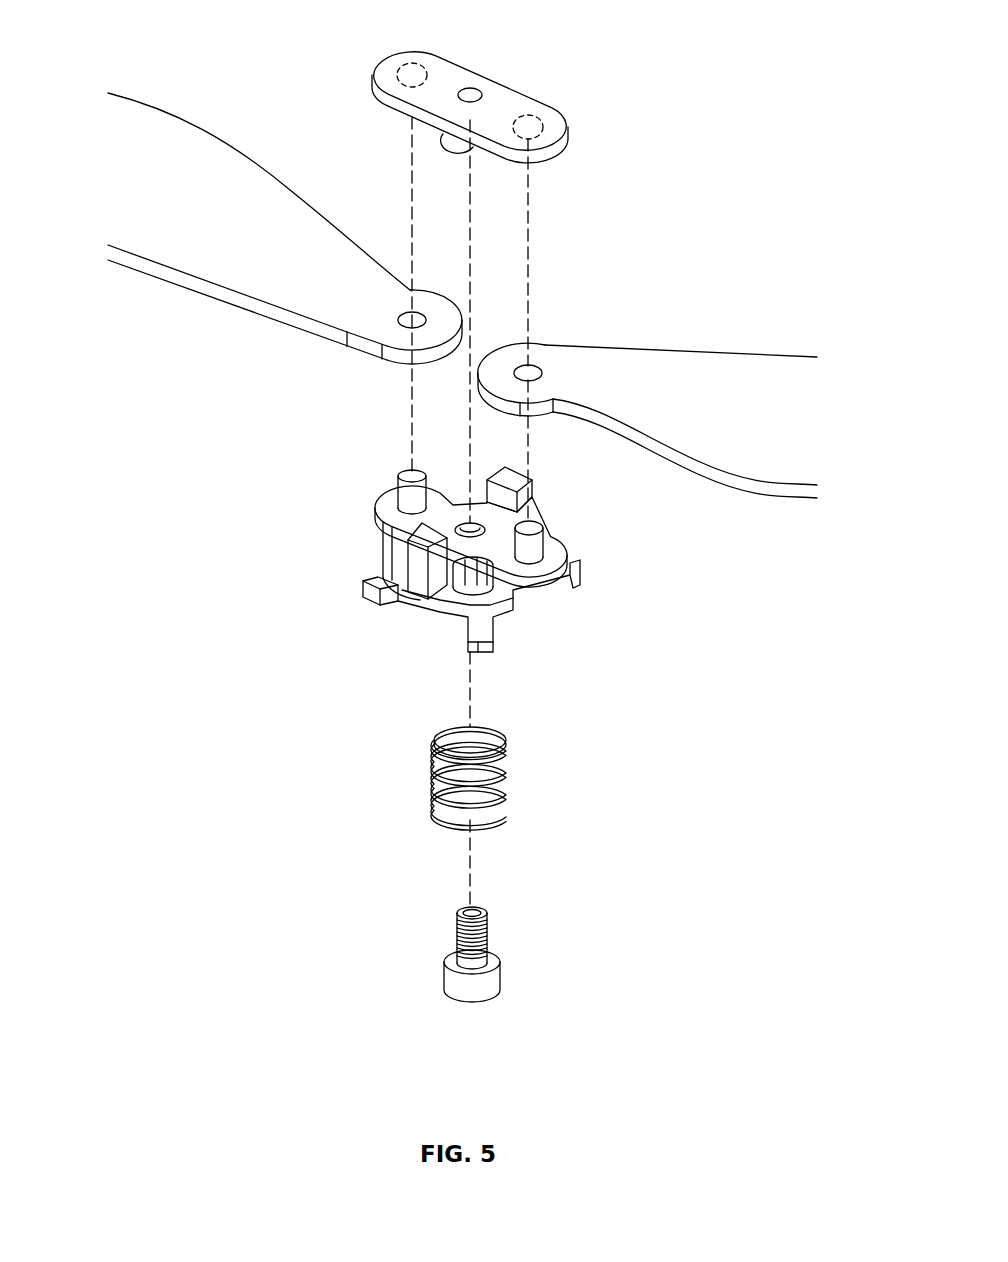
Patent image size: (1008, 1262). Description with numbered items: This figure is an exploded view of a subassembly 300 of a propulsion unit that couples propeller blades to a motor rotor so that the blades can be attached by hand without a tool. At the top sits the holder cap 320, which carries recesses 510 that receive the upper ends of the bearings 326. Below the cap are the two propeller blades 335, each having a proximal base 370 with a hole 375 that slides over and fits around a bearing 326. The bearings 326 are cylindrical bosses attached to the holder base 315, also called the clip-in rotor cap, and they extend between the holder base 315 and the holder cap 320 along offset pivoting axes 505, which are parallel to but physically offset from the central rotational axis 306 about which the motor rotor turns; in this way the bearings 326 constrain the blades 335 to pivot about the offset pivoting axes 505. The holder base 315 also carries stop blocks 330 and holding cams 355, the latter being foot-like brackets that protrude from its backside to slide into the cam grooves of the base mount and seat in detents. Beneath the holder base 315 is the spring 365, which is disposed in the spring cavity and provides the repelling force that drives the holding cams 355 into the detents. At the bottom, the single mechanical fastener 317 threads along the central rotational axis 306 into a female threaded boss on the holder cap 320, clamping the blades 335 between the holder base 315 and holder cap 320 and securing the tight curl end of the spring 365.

The subassembly 300 is at (725, 145).
The holder cap 320 is at (513, 100).
The recesses 510 is at (386, 64).
The offset pivoting axes 505 is at (410, 205).
The propeller blades 335 is at (462, 295).
The proximal base 370 is at (370, 294).
The hole 375 is at (408, 327).
The holder base 315 is at (476, 662).
The central rotational axis 306 is at (472, 465).
The bearings 326 is at (553, 535).
The stop blocks 330 is at (517, 473).
The holding cams 355 is at (573, 572).
The spring 365 is at (442, 805).
The mechanical fastener 317 is at (447, 985).